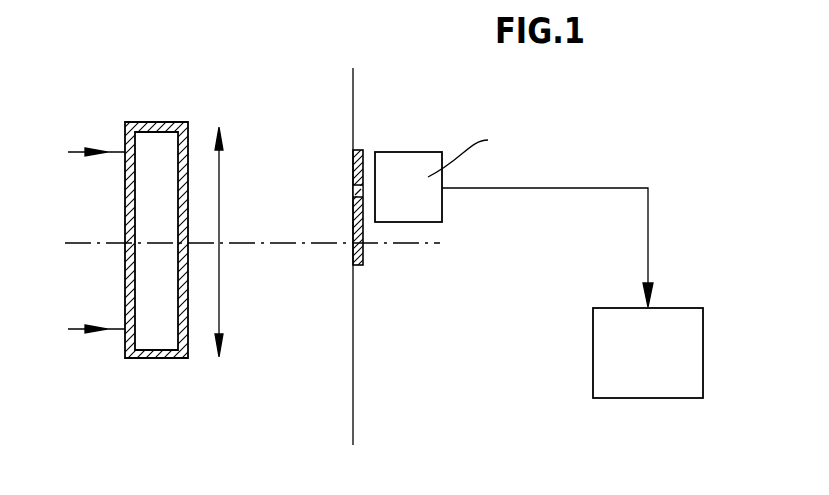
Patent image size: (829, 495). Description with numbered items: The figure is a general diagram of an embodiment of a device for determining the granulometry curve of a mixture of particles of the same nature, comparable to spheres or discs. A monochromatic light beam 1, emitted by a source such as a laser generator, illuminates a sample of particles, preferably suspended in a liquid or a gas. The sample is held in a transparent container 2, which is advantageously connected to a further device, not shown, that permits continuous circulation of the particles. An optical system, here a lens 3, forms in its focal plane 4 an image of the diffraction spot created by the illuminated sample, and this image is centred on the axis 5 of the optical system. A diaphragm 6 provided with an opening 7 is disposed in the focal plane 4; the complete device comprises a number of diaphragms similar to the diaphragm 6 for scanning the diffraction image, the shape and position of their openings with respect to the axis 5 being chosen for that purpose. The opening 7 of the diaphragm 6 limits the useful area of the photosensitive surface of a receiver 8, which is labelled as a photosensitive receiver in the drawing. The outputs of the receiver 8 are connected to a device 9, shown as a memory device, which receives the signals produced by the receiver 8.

The monochromatic light beam 1 is at (81, 333).
The transparent container 2 is at (163, 356).
The lens 3 is at (223, 337).
The focal plane 4 is at (353, 401).
The axis 5 is at (307, 244).
The diaphragm 6 is at (363, 256).
The opening 7 is at (353, 195).
The receiver 8 is at (415, 170).
The device 9 is at (690, 360).